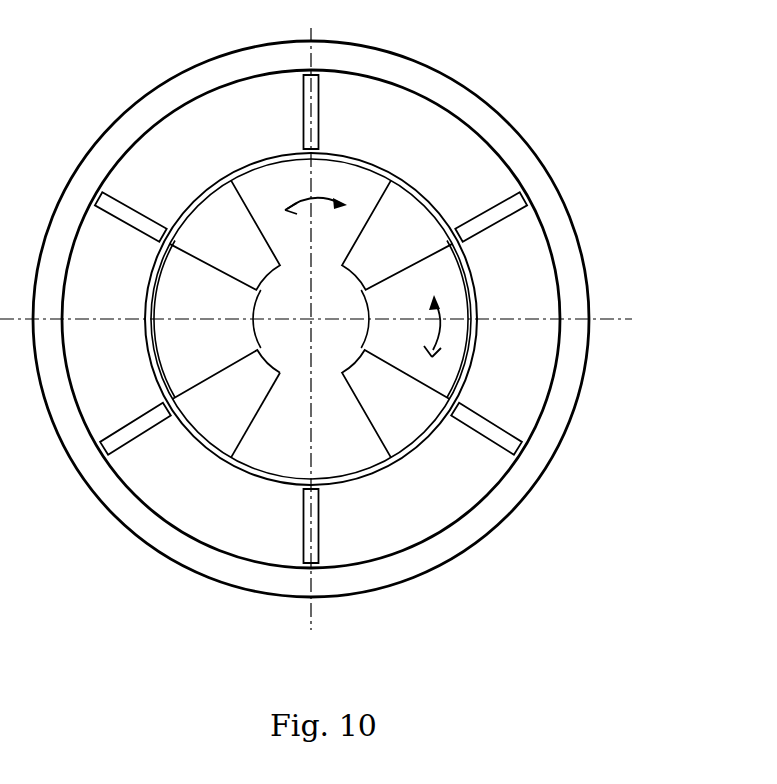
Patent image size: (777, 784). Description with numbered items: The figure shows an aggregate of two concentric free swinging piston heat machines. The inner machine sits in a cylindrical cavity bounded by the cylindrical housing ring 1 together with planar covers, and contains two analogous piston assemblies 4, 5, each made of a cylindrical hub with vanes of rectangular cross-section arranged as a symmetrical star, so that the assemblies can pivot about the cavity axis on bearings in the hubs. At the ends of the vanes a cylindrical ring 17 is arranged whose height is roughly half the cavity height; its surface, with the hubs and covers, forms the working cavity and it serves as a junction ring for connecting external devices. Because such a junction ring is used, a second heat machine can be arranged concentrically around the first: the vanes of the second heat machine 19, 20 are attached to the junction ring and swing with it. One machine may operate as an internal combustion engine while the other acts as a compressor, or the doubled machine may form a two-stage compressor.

The cylindrical housing ring 1 is at (161, 107).
The cylindrical ring 17 is at (425, 200).
The vane of second heat machine 19 is at (475, 422).
The vane of second heat machine 20 is at (313, 530).
The piston assembly 4 is at (188, 390).
The piston assembly 5 is at (249, 435).